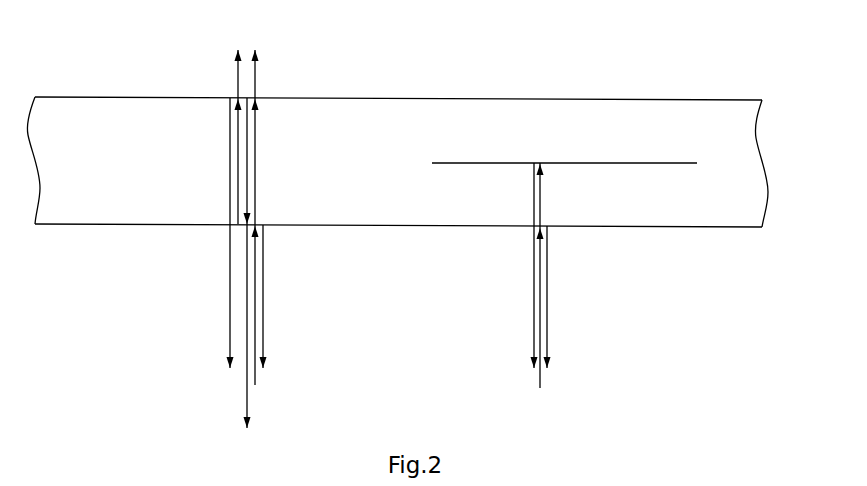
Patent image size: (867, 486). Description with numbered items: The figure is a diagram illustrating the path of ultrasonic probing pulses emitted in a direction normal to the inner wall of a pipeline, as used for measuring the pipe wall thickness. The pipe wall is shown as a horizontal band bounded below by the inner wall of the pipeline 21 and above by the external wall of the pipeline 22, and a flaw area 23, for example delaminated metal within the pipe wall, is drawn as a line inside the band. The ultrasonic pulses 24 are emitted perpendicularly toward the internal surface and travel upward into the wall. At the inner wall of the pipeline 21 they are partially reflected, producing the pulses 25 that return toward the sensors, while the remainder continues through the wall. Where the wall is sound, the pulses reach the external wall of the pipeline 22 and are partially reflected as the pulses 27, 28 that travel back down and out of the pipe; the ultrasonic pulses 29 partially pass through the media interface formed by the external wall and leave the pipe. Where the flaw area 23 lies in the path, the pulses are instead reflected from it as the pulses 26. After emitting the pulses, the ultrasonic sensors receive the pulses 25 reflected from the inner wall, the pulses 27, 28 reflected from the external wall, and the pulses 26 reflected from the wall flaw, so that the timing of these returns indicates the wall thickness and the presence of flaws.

The inner wall of the pipeline 21 is at (568, 226).
The external wall of the pipeline 22 is at (573, 99).
The flaw area 23 is at (625, 163).
The ultrasonic pulses 24 is at (411, 316).
The pulses reflected from the inner wall 25 is at (421, 296).
The pulses reflected from the wall flaw 26 is at (520, 265).
The pulses reflected from the external wall 27 is at (242, 278).
The pulses reflected from the external wall 28 is at (220, 247).
The ultrasonic pulses passing through the external wall 29 is at (248, 60).